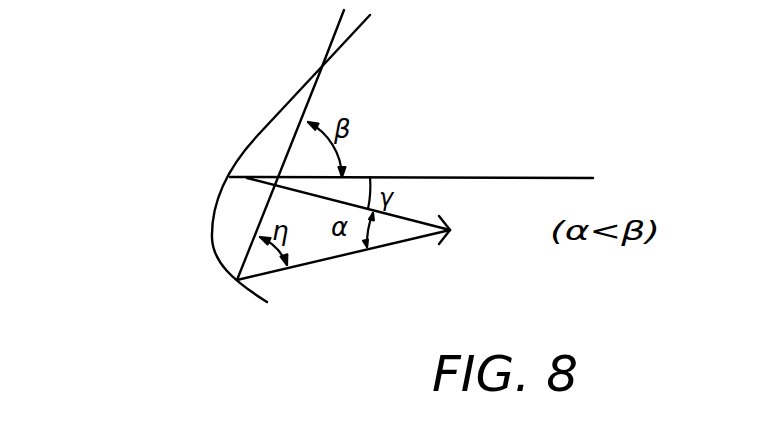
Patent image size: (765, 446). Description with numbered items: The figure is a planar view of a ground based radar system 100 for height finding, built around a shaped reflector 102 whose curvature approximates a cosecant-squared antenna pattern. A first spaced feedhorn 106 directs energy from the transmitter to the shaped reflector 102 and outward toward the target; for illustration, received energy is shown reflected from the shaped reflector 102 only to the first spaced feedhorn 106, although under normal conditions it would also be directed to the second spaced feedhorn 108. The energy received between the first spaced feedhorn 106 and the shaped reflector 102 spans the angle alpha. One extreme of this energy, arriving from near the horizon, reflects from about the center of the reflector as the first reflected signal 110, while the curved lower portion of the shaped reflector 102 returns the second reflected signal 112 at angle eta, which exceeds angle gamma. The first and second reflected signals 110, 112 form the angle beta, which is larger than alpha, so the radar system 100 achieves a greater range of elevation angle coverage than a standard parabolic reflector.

The ground based radar system 100 is at (172, 220).
The shaped reflector 102 is at (250, 138).
The first spaced feedhorn 106 is at (452, 228).
The second spaced feedhorn 108 is at (442, 260).
The first reflected signal 110 is at (452, 178).
The second reflected signal 112 is at (328, 56).